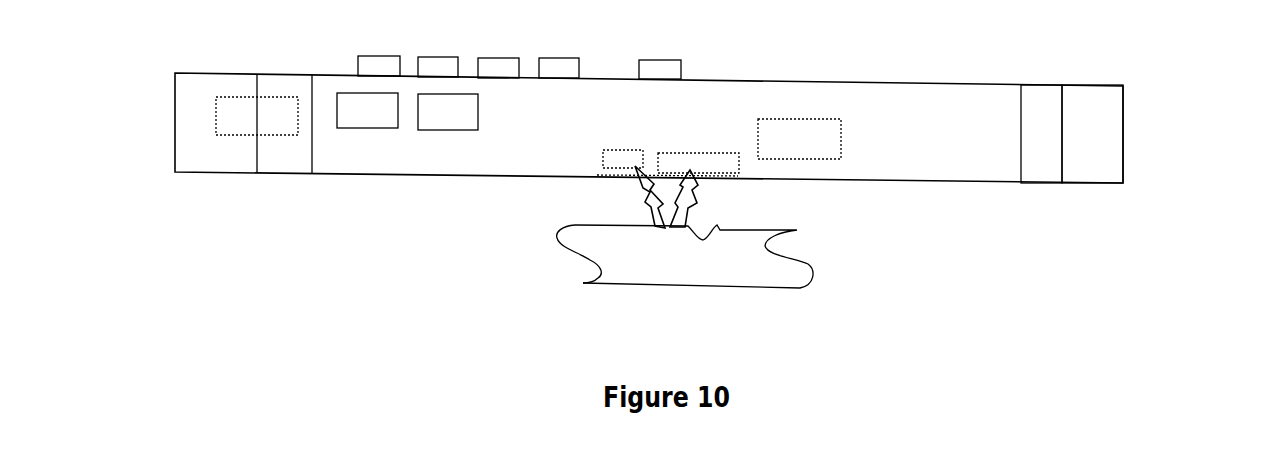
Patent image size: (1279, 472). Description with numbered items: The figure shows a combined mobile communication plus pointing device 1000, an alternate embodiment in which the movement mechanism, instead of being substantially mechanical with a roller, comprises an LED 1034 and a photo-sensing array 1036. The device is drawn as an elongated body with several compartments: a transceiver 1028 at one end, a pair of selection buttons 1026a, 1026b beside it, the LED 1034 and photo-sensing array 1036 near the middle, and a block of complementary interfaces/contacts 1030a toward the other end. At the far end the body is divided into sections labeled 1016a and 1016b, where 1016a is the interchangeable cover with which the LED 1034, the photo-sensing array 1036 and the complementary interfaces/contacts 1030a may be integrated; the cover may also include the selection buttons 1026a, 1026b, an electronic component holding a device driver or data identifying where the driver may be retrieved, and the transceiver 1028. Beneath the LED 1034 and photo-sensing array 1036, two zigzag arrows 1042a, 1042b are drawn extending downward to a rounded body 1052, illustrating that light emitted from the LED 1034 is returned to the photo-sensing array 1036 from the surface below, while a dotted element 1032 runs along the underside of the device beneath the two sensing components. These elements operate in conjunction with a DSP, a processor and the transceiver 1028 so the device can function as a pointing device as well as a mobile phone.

The combined device 1000 is at (93, 139).
The transceiver 1028 is at (267, 102).
The selection button 1026a is at (378, 107).
The selection button 1026b is at (458, 108).
The LED 1034 is at (617, 157).
The photo-sensing array 1036 is at (710, 152).
The ground plane 1032 is at (713, 177).
The complementary interfaces/contacts 1030a is at (801, 121).
The electric field 1042a is at (638, 187).
The electric field 1042b is at (727, 222).
The user body part 1052 is at (587, 247).
The interchangeable cover 1016a is at (967, 162).
The housing section 1016b is at (1082, 117).